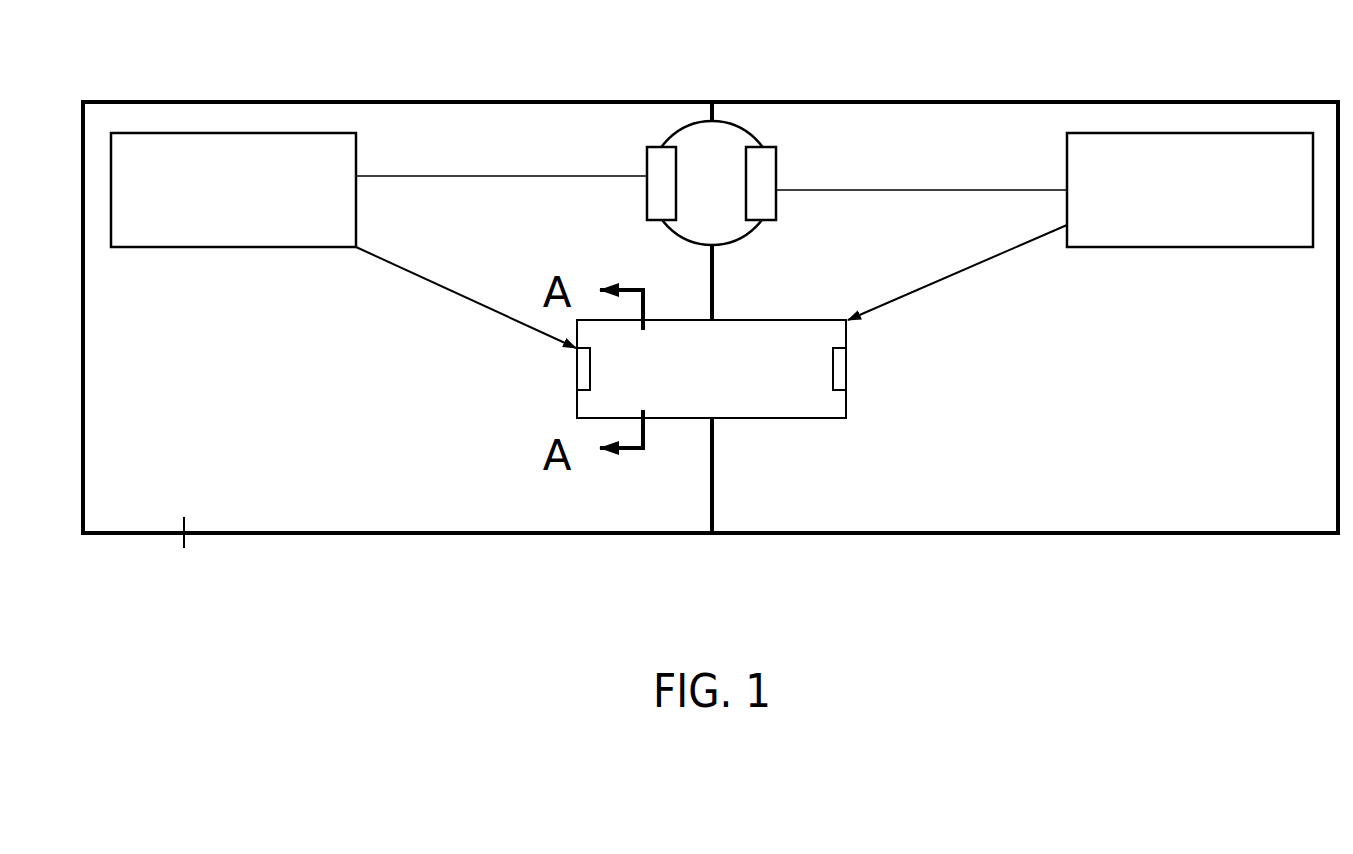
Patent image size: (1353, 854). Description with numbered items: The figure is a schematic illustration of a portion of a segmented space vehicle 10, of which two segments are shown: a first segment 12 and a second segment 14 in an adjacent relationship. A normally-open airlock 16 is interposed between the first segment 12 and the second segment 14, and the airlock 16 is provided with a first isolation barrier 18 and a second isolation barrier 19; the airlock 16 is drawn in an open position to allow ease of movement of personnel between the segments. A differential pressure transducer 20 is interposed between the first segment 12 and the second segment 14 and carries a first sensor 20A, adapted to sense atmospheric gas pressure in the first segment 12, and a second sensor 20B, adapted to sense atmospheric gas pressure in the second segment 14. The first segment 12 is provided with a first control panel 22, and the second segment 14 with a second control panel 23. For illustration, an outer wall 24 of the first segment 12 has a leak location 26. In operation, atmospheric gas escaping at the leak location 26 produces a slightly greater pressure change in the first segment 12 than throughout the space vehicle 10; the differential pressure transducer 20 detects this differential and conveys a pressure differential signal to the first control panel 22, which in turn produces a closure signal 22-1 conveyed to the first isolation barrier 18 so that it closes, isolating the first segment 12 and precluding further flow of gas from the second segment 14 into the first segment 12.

The space vehicle 10 is at (967, 630).
The first segment 12 is at (338, 450).
The second segment 14 is at (1065, 450).
The airlock 16 is at (785, 420).
The first isolation barrier 18 is at (577, 374).
The second isolation barrier 19 is at (848, 372).
The differential pressure transducer 20 is at (730, 135).
The first sensor 20A is at (647, 158).
The second sensor 20B is at (776, 168).
The first control panel 22 is at (249, 133).
The closure signal 22-1 is at (460, 298).
The second control panel 23 is at (1203, 133).
The outer wall 24 is at (532, 535).
The leak location 26 is at (180, 536).